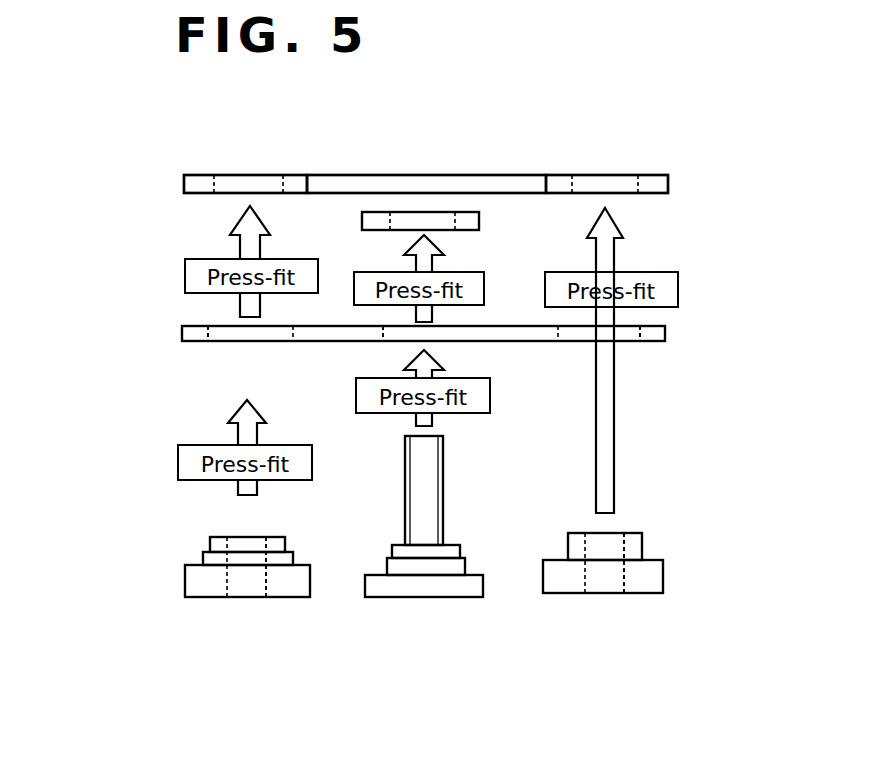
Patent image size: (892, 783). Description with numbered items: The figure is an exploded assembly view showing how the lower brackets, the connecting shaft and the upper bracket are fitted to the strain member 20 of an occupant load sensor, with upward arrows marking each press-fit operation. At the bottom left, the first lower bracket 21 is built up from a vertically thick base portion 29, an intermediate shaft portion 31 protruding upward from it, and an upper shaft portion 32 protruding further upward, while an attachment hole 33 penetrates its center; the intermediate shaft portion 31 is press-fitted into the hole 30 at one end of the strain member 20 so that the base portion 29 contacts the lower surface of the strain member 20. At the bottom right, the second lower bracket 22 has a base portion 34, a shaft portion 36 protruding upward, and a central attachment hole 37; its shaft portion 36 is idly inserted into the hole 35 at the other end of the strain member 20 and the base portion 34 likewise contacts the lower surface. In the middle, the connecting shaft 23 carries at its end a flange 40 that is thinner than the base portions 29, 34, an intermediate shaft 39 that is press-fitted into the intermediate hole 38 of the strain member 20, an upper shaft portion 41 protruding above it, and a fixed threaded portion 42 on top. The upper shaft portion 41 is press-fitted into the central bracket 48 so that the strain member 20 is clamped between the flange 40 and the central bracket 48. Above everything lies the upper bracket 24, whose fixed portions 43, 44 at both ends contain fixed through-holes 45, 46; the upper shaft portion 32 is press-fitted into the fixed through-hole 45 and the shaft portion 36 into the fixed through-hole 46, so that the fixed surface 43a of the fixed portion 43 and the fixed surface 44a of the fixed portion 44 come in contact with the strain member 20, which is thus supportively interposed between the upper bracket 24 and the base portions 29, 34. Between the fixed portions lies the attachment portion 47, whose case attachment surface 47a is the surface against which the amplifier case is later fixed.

The strain member 20 is at (338, 343).
The first lower bracket 21 is at (211, 600).
The second lower bracket 22 is at (567, 597).
The connecting shaft 23 is at (399, 600).
The upper bracket 24 is at (342, 172).
The base portion 29 is at (190, 582).
The hole 30 is at (213, 344).
The intermediate shaft portion 31 is at (207, 559).
The upper shaft portion 32 is at (212, 543).
The attachment hole 33 is at (266, 597).
The base portion 34 is at (660, 580).
The hole 35 is at (628, 345).
The shaft portion 36 is at (640, 548).
The attachment hole 37 is at (623, 592).
The intermediate hole 38 is at (456, 330).
The intermediate shaft 39 is at (458, 567).
The flange 40 is at (467, 588).
The upper shaft portion 41 is at (397, 553).
The fixed threaded portion 42 is at (435, 458).
The fixed portion 43 is at (185, 187).
The fixed surface 43a is at (215, 196).
The fixed portion 44 is at (665, 188).
The fixed surface 44a is at (633, 197).
The fixed through-hole 45 is at (218, 183).
The fixed through-hole 46 is at (643, 188).
The attachment portion 47 is at (467, 183).
The case attachment surface 47a is at (348, 196).
The central bracket 48 is at (480, 222).